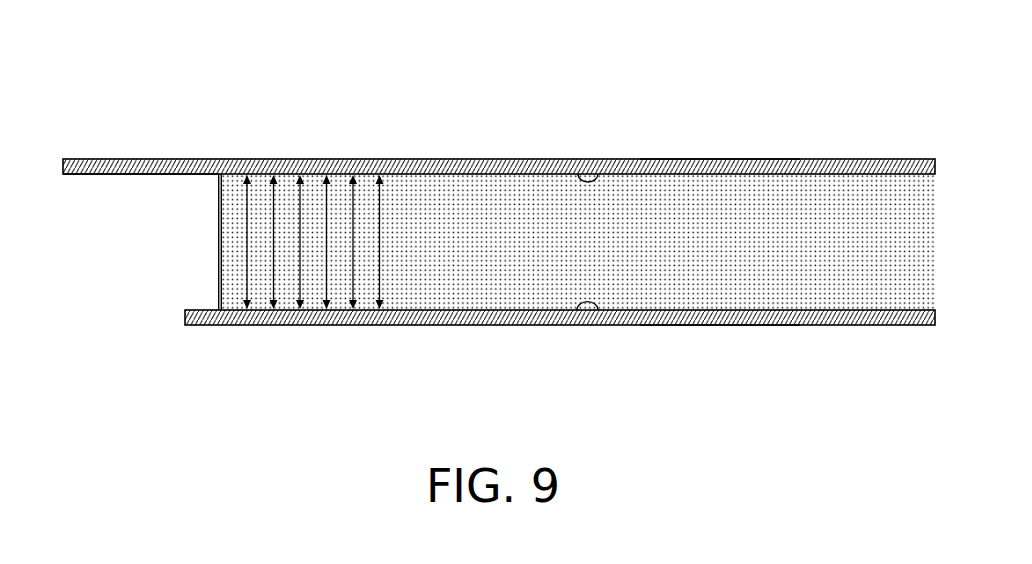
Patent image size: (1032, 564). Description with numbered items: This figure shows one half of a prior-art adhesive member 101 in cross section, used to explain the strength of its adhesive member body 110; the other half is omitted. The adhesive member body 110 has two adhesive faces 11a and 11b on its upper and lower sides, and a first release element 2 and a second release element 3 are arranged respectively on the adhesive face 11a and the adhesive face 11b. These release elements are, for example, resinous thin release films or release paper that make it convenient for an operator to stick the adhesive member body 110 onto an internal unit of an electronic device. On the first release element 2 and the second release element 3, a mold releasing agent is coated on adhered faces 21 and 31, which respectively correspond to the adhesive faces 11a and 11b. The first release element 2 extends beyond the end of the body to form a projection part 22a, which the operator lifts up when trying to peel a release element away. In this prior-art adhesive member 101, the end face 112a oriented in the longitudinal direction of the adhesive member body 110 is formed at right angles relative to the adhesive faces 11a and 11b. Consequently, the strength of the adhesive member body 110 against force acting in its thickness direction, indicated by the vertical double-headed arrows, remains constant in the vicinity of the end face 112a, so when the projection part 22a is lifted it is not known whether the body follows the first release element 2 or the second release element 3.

The adhesive member 101 is at (830, 69).
The first release element 2 is at (332, 144).
The second release element 3 is at (325, 338).
The adhesive member body 110 is at (470, 187).
The end face 112a is at (218, 240).
The adhered face 21 is at (600, 170).
The adhered face 31 is at (599, 328).
The projection part 22a is at (132, 173).
The adhesive face 11a is at (732, 168).
The adhesive face 11b is at (731, 328).